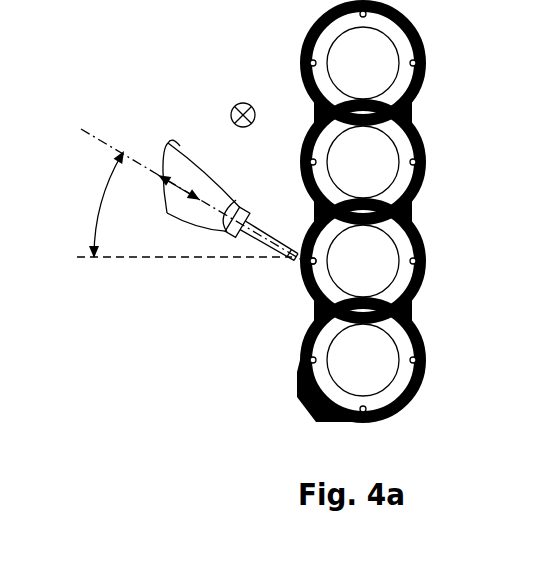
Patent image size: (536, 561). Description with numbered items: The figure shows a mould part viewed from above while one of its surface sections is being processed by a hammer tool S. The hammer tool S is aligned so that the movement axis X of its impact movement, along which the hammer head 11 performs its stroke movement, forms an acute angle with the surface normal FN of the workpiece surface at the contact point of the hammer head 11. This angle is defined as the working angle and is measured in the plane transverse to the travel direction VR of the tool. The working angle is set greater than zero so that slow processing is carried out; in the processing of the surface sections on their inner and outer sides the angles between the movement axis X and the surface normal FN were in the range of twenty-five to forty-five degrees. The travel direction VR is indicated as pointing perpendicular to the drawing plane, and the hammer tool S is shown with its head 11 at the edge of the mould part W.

The workpiece (cylinder head gasket) W is at (430, 62).
The hammer tool S is at (197, 167).
The movement axis X is at (112, 148).
The surface normal FN is at (158, 257).
The travel direction VR is at (247, 103).
The hammer head 11 is at (292, 272).